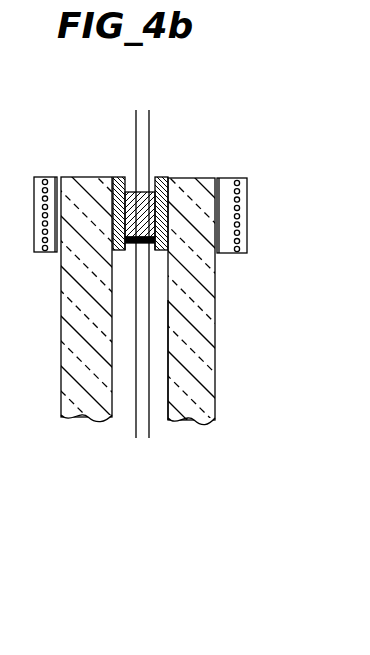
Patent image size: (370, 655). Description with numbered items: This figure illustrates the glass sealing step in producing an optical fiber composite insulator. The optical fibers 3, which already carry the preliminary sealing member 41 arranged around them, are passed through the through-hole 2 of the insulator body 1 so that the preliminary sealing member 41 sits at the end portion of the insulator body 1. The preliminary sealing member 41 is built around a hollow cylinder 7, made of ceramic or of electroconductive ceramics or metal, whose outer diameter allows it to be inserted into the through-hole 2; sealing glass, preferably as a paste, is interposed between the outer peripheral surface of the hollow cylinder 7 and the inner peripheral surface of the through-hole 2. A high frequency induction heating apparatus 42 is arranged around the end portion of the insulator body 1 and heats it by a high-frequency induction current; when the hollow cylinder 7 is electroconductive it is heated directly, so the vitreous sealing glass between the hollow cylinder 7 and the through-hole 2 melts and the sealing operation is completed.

The insulator body 1 is at (202, 323).
The through-hole 2 is at (166, 355).
The optical fibers 3 is at (150, 133).
The hollow cylinder 7 is at (158, 173).
The preliminary sealing member 41 is at (151, 258).
The high frequency induction heating apparatus 42 is at (247, 200).